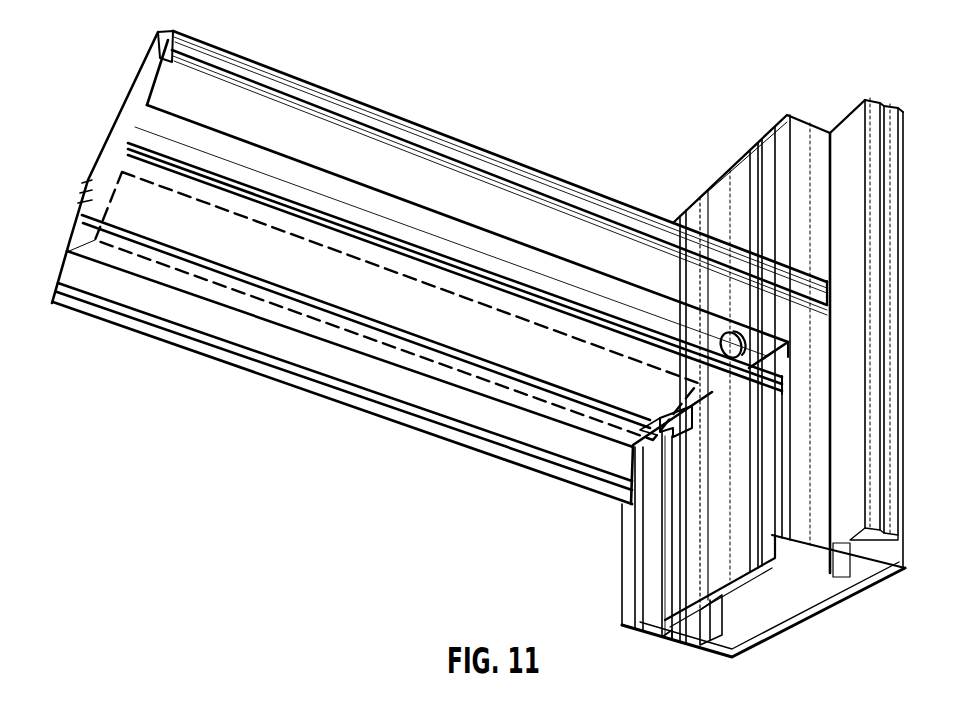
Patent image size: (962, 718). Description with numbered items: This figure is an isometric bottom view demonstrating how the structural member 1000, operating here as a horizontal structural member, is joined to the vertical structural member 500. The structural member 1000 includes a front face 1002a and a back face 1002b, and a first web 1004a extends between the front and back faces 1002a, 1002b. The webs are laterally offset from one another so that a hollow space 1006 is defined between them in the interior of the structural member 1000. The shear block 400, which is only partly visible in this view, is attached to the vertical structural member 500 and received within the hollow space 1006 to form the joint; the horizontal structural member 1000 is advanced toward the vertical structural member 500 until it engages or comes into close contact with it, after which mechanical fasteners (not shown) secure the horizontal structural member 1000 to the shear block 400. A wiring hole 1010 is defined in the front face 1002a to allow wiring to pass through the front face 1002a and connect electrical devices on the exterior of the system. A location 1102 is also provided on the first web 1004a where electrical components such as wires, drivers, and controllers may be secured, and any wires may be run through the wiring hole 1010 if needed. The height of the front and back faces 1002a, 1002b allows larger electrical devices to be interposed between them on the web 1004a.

The structural member 1000 is at (506, 266).
The front face 1002a is at (157, 62).
The back face 1002b is at (497, 425).
The first web 1004a is at (120, 256).
The hollow space 1006 is at (121, 129).
The location 1102 is at (381, 344).
The wiring hole 1010 is at (745, 350).
The shear block 400 is at (692, 428).
The vertical structural member 500 is at (746, 155).